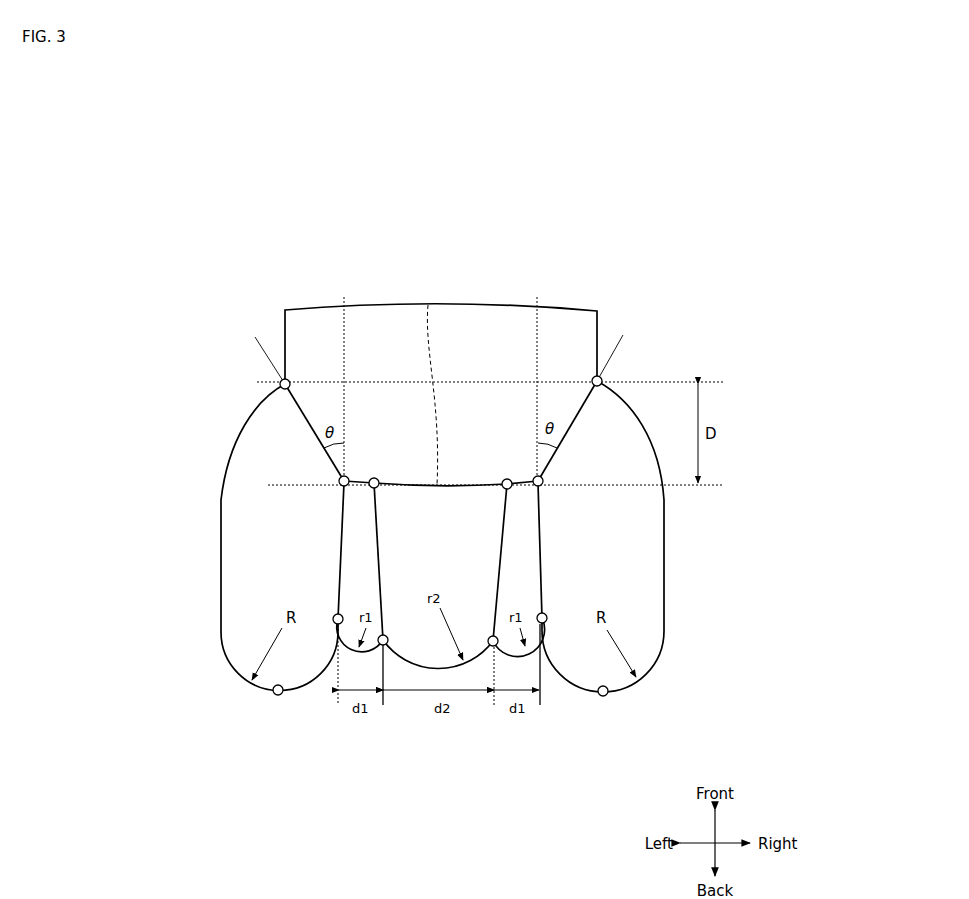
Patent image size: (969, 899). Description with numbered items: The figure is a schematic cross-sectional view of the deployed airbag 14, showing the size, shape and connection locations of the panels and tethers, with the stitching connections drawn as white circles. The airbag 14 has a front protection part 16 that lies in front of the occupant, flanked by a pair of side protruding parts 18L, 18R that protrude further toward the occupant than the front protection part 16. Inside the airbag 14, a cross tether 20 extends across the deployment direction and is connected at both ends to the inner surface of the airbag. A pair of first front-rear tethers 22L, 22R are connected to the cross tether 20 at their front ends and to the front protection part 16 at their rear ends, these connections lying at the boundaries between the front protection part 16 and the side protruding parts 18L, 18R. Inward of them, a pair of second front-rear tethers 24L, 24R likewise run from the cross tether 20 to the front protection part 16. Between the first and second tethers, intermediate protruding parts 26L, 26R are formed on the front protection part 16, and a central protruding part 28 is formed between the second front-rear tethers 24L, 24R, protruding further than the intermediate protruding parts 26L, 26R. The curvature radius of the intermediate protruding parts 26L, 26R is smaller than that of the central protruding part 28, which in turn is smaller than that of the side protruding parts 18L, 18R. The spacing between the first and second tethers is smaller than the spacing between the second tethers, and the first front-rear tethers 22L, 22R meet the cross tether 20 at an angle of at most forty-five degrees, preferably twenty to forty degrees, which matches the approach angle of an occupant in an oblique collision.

The airbag 14 is at (218, 448).
The front protection part 16 is at (455, 666).
The side protruding part 18L is at (223, 632).
The side protruding part 18R is at (657, 633).
The cross tether 20 is at (428, 305).
The first front-rear tether 22L is at (342, 530).
The first front-rear tether 22R is at (540, 521).
The second front-rear tether 24L is at (380, 582).
The second front-rear tether 24R is at (499, 570).
The intermediate protruding part 26L is at (366, 654).
The intermediate protruding part 26R is at (535, 650).
The central protruding part 28 is at (418, 665).